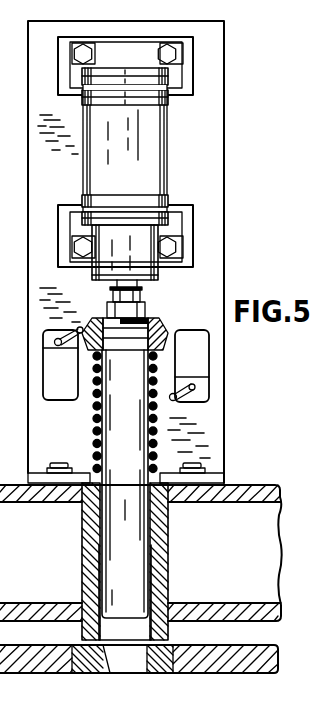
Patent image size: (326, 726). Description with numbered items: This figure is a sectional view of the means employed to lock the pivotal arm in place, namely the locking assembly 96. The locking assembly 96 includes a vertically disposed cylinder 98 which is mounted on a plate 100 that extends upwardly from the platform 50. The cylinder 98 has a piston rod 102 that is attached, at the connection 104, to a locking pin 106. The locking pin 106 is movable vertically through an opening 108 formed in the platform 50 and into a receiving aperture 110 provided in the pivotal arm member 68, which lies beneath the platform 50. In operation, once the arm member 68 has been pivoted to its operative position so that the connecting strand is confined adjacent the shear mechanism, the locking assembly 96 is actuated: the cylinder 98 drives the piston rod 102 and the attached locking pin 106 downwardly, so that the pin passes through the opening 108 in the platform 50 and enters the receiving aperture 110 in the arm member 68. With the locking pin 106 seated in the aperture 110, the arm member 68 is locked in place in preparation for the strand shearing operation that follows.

The platform 50 is at (260, 493).
The arm member 68 is at (230, 662).
The locking assembly 96 is at (202, 185).
The cylinder 98 is at (148, 144).
The plate 100 is at (207, 69).
The piston rod 102 is at (147, 291).
The attachment 104 is at (138, 313).
The locking pin 106 is at (117, 417).
The opening 108 is at (153, 530).
The receiving aperture 110 is at (120, 660).